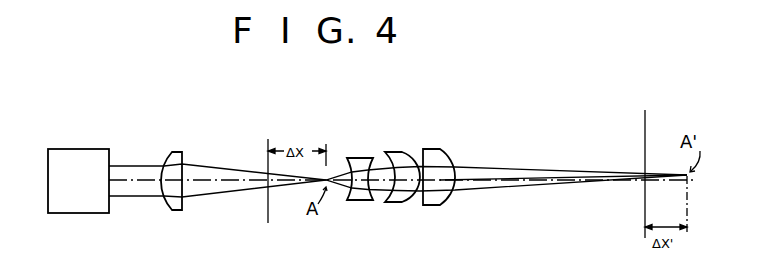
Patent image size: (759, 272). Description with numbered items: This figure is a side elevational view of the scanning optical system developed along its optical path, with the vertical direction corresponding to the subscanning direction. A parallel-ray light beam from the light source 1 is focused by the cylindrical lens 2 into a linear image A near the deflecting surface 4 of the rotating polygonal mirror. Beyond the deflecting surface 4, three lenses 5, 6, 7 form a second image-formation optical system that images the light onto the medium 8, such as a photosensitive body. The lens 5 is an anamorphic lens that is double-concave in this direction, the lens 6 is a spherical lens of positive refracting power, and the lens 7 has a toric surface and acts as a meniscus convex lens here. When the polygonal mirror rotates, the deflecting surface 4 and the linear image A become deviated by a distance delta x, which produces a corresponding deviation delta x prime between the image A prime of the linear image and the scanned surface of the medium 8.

The light source 1 is at (78, 160).
The cylindrical lens 2 is at (175, 156).
The deflecting surface 4 is at (267, 162).
The anamorphic lens 5 is at (358, 162).
The spherical lens 6 is at (399, 158).
The toric lens 7 is at (437, 156).
The medium 8 is at (644, 142).